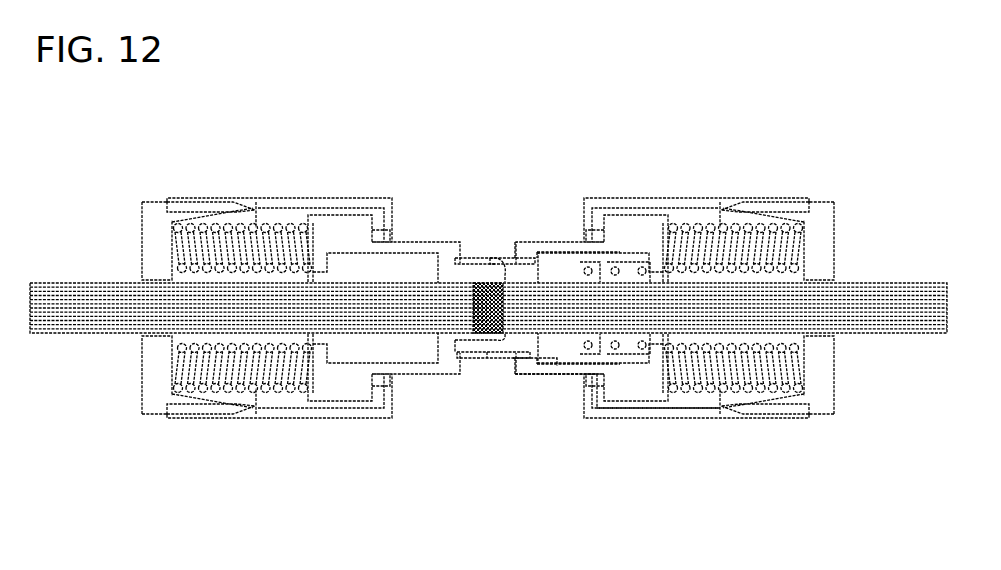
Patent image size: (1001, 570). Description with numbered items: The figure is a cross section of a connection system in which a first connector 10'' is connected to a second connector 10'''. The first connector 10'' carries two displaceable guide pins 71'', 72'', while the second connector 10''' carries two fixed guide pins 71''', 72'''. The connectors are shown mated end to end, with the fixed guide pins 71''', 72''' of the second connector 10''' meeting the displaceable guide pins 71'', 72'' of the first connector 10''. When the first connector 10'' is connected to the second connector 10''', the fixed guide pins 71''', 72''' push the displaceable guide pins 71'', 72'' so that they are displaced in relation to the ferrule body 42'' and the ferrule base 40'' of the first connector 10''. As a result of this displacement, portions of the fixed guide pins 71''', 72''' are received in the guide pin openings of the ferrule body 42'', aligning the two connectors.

The second connector 10''' is at (286, 363).
The first connector 10'' is at (675, 367).
The fixed guide pin 72''' is at (468, 207).
The displaceable guide pin 71'' is at (555, 194).
The fixed guide pin 71''' is at (473, 400).
The ferrule body 42'' is at (493, 397).
The displaceable guide pin 72'' is at (566, 426).
The ferrule base 40'' is at (617, 409).